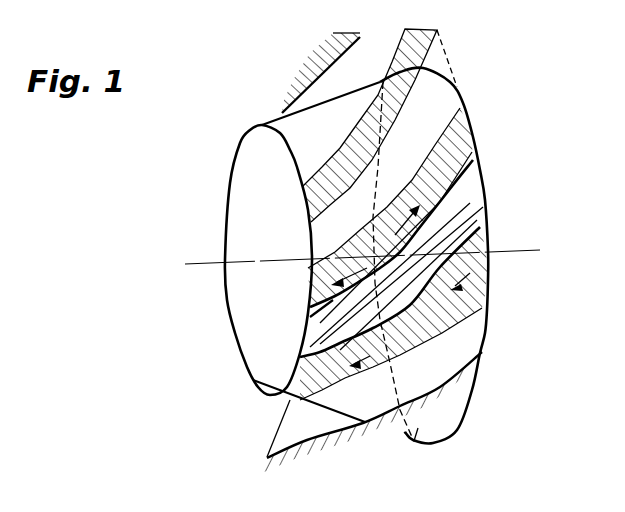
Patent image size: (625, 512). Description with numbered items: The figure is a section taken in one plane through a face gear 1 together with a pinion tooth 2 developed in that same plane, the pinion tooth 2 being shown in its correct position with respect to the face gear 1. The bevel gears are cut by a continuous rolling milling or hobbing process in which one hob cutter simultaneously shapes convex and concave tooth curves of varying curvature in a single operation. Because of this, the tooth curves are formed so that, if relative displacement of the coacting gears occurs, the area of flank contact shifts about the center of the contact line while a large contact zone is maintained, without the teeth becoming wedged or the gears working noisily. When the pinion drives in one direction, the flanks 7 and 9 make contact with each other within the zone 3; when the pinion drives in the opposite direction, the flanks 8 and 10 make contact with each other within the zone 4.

The face gear 1 is at (447, 77).
The pinion tooth 2 is at (482, 186).
The zone 3 is at (395, 261).
The zone 4 is at (402, 345).
The flank 7 is at (338, 60).
The flank 8 is at (448, 252).
The flank 9 is at (320, 314).
The flank 10 is at (360, 153).